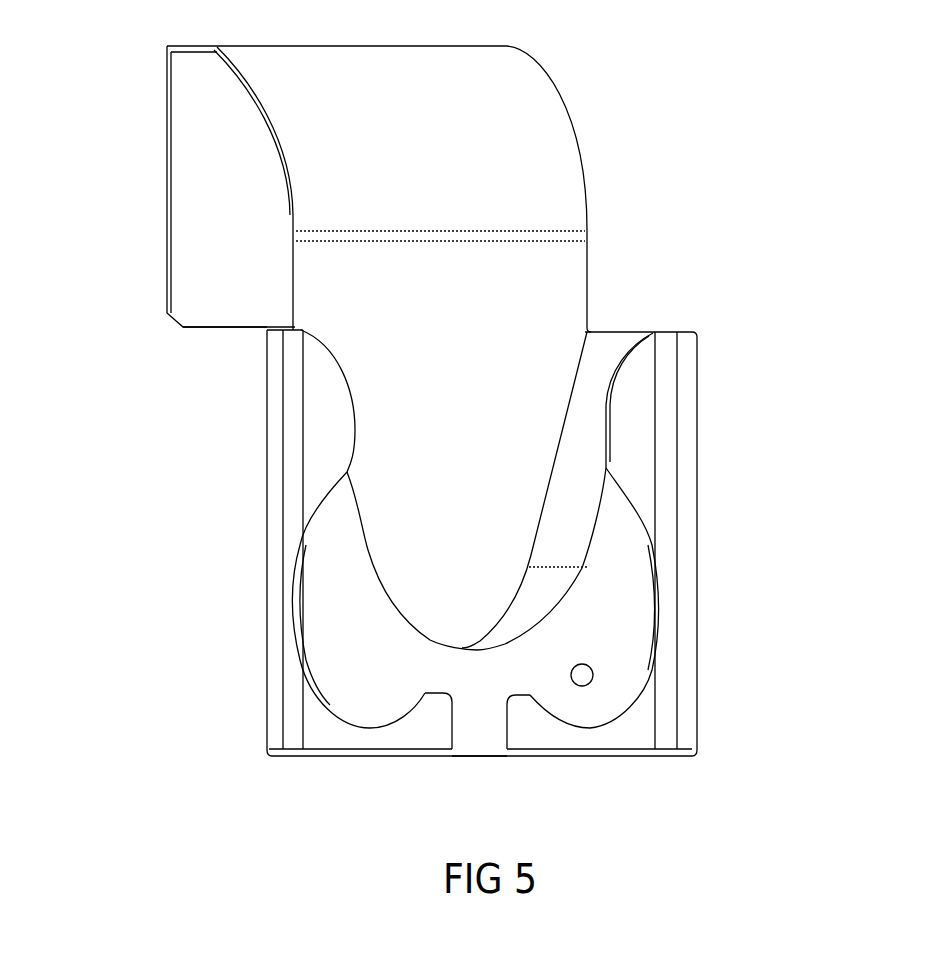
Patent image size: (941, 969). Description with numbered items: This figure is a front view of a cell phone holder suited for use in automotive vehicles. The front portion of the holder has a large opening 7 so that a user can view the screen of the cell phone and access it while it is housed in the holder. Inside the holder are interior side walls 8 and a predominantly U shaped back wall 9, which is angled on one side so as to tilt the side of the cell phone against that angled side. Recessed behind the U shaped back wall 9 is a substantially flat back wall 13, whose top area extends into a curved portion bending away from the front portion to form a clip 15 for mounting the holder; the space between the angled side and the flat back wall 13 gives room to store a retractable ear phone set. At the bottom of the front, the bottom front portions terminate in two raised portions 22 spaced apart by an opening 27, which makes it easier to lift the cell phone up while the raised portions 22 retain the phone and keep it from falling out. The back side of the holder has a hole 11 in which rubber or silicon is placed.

The clip 15 is at (585, 258).
The flat back wall 13 is at (415, 316).
The interior side walls 8 is at (288, 328).
The large opening 7 is at (527, 429).
The U shaped back wall 9 is at (400, 616).
The hole 11 is at (590, 666).
The raised portions 22 is at (425, 693).
The opening 27 is at (483, 742).